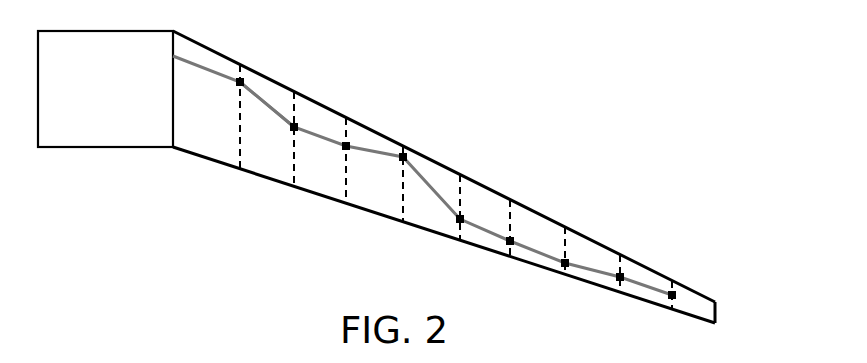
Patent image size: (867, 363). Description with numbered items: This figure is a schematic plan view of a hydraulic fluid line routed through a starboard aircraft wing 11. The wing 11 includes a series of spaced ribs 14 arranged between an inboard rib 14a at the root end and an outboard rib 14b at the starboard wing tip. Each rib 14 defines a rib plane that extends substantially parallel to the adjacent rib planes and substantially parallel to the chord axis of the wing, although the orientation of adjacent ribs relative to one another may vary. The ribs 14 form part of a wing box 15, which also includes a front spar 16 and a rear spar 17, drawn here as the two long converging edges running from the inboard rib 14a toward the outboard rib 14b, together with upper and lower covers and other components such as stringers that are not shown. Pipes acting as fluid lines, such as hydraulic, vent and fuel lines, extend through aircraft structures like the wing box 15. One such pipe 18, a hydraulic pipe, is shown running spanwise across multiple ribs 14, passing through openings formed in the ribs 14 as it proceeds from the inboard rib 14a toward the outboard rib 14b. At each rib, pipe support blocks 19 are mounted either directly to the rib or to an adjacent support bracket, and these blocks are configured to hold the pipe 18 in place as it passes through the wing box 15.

The wing 11 is at (415, 169).
The ribs 14 is at (295, 173).
The inboard rib 14a is at (173, 135).
The outboard rib 14b is at (716, 309).
The wing box 15 is at (368, 137).
The front spar 16 is at (530, 209).
The rear spar 17 is at (490, 251).
The pipe 18 is at (262, 99).
The pipe support blocks 19 is at (298, 125).